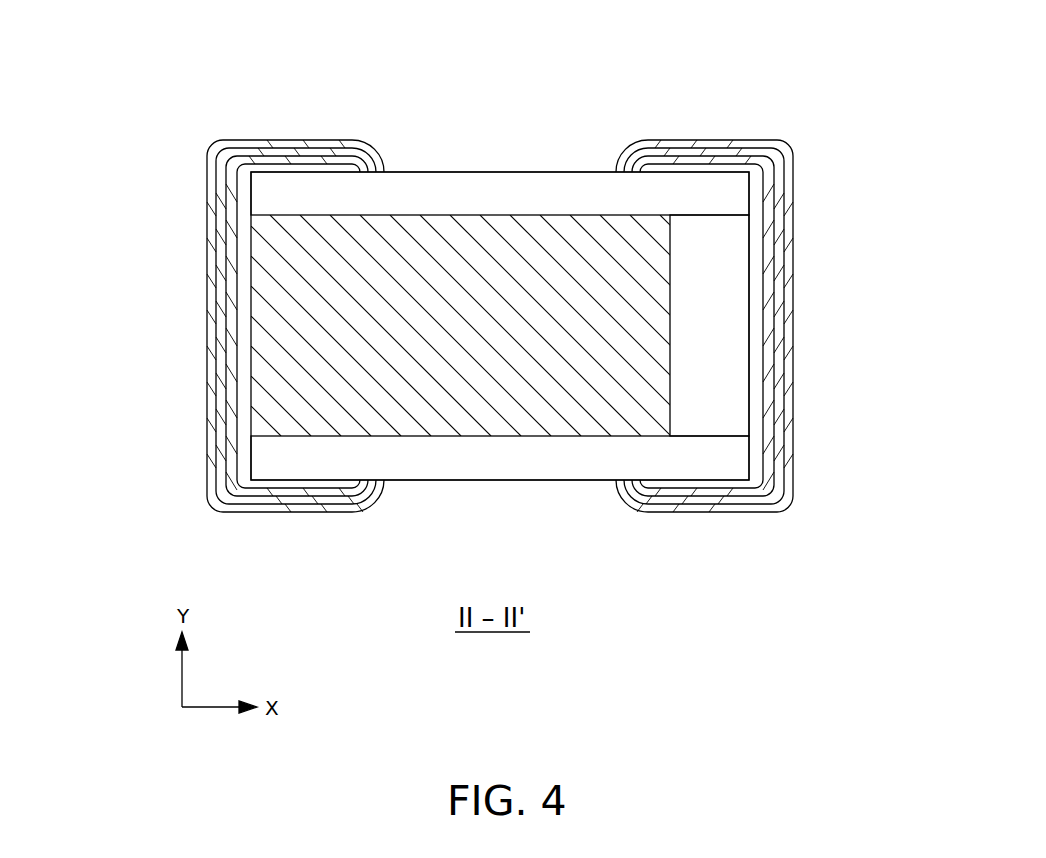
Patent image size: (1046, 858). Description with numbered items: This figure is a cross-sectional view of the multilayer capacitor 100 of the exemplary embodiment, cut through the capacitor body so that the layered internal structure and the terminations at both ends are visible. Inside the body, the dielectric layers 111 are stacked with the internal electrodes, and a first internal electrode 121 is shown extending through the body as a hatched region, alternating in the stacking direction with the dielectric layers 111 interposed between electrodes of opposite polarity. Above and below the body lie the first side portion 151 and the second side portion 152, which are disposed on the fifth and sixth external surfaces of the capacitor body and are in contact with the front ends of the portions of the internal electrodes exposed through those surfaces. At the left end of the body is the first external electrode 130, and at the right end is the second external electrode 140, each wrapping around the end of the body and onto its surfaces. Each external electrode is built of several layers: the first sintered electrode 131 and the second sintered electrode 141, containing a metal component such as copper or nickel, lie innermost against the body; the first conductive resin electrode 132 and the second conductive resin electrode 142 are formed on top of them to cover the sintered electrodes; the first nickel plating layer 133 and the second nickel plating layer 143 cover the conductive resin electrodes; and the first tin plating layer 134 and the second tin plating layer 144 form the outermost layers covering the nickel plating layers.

The multilayer capacitor 100 is at (525, 47).
The dielectric layers 111 is at (732, 302).
The first internal electrode 121 is at (467, 230).
The first side portion 151 is at (547, 183).
The second side portion 152 is at (545, 473).
The first external electrode 130 is at (227, 326).
The first sintered electrode 131 is at (243, 311).
The first conductive resin electrode 132 is at (230, 352).
The first nickel plating layer 133 is at (220, 390).
The first tin plating layer 134 is at (122, 303).
The second external electrode 140 is at (774, 326).
The second sintered electrode 141 is at (758, 338).
The second conductive resin electrode 142 is at (770, 378).
The second nickel plating layer 143 is at (780, 417).
The second tin plating layer 144 is at (876, 328).